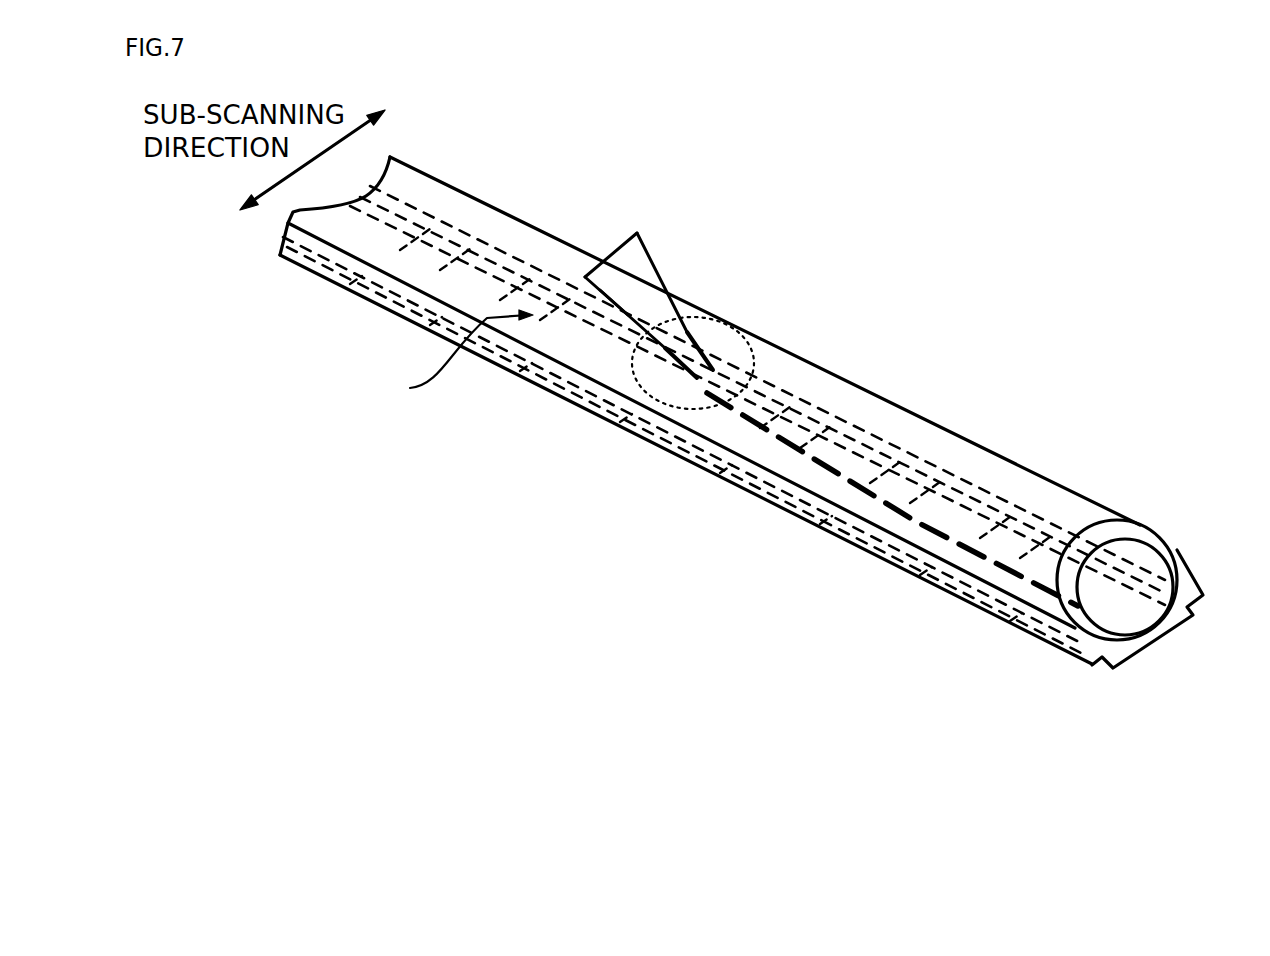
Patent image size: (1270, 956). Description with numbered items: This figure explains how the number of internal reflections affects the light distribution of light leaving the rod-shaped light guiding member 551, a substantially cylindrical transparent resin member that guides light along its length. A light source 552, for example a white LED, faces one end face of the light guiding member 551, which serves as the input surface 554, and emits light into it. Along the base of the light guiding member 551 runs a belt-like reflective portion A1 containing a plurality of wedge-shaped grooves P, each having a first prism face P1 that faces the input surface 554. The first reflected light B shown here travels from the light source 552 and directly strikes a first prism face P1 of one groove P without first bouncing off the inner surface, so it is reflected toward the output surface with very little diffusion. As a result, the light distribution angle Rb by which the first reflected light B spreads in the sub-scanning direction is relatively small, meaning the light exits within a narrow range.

The light guiding member 551 is at (913, 408).
The light source 552 is at (1113, 597).
The input surface 554 is at (1150, 538).
The first reflected light B is at (652, 249).
The light distribution angle Rb is at (626, 296).
The first prism face P1 is at (746, 388).
The grooves P is at (675, 406).
The reflective portion A1 is at (448, 360).